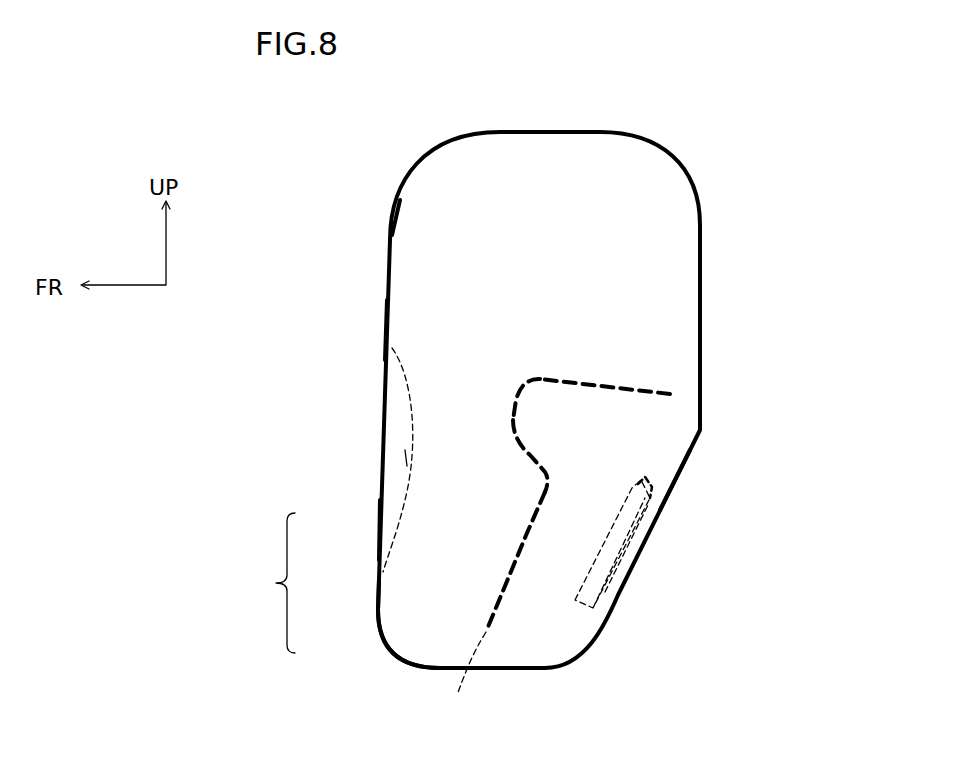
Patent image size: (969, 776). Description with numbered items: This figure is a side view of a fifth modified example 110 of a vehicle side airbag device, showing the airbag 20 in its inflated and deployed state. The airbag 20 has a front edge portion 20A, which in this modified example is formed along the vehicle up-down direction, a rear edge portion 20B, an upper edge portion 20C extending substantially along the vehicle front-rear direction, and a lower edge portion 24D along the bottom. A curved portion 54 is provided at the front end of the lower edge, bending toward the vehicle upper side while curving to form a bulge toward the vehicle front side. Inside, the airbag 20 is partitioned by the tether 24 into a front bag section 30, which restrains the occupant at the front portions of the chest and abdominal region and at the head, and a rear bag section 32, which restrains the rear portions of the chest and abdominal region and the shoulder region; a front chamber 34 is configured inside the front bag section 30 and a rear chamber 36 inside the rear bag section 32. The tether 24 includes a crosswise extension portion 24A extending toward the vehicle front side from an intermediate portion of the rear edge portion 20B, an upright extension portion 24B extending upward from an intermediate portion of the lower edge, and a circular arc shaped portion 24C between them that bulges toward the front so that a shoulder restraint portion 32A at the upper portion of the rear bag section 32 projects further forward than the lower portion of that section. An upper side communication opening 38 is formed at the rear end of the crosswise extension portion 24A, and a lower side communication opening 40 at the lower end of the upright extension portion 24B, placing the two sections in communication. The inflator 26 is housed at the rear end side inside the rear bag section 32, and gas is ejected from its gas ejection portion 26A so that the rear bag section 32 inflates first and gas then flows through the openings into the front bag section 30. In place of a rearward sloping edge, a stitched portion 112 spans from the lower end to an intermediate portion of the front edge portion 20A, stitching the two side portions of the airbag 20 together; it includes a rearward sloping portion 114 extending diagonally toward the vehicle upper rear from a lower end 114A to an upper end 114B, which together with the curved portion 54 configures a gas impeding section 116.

The airbag 20 is at (686, 161).
The front edge portion 20A is at (385, 323).
The rear edge portion 20B is at (700, 310).
The upper edge portion 20C is at (552, 130).
The tether 24 is at (547, 469).
The crosswise extension portion 24A is at (617, 378).
The upright extension portion 24B is at (520, 560).
The circular arc shaped portion 24C is at (520, 392).
The lower edge of airbag 24D is at (518, 670).
The inflator 26 is at (603, 590).
The gas ejection portion 26A is at (655, 487).
The front bag section 30 is at (420, 224).
The rear bag section 32 is at (588, 510).
The shoulder restraint portion 32A is at (537, 434).
The front chamber 34 is at (410, 262).
The rear chamber 36 is at (575, 542).
The upper side communication opening 38 is at (672, 394).
The lower side communication opening 40 is at (453, 670).
The curved portion 54 is at (383, 645).
The fifth modified example 110 is at (759, 184).
The stitched portion 112 is at (410, 402).
The rearward sloping portion 114 is at (395, 523).
The lower end 114A is at (378, 600).
The upper end 114B is at (410, 457).
The gas impeding section 116 is at (332, 584).